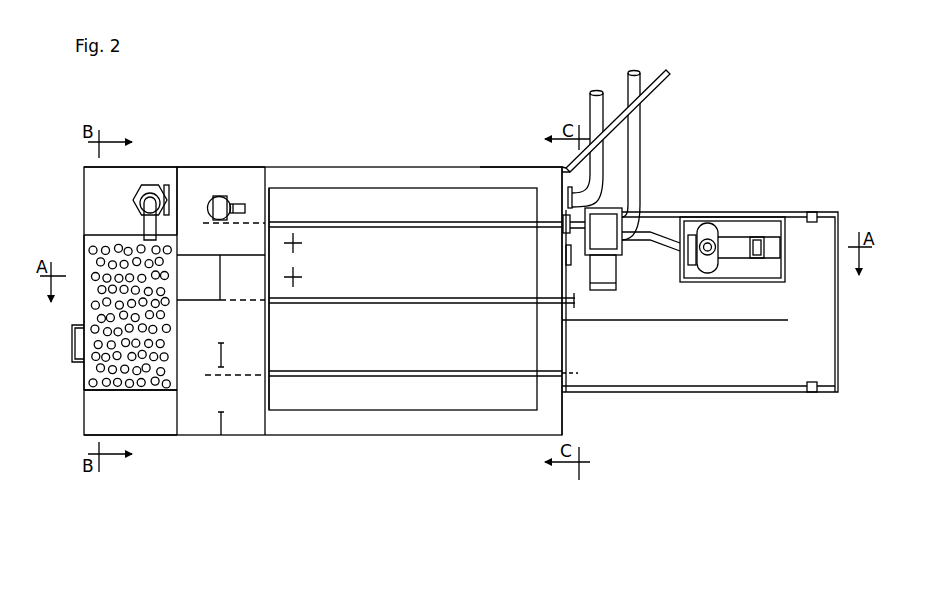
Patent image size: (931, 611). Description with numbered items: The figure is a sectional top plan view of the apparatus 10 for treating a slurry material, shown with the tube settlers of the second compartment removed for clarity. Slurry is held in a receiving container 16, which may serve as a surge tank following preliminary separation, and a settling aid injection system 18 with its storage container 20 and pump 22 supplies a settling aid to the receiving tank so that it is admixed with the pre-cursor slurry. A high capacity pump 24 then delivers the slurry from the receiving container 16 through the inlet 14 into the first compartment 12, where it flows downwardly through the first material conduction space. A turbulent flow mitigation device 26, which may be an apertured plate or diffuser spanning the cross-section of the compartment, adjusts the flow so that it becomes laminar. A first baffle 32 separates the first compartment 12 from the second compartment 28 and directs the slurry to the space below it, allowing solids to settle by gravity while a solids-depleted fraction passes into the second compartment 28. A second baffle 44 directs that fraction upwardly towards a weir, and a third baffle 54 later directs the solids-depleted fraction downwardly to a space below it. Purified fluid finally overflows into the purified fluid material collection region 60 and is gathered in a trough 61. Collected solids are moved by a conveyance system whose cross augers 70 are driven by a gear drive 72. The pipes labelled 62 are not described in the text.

The apparatus 10 is at (392, 90).
The first compartment 12 is at (84, 373).
The inlet 14 is at (84, 237).
The receiving container 16 is at (143, 167).
The settling aid injection system 18 is at (245, 180).
The storage container 20 is at (264, 182).
The pump 22 is at (220, 195).
The pump 24 is at (152, 186).
The turbulent flow mitigation device 26 is at (104, 386).
The second compartment 28 is at (222, 267).
The first baffle 32 is at (178, 308).
The second baffle 44 is at (222, 295).
The third baffle 54 is at (269, 328).
The purified fluid material collection region 60 is at (412, 167).
The trough 61 is at (482, 170).
The pipes 62 is at (628, 80).
The cross augers 70 is at (438, 222).
The gear drive 72 is at (625, 258).